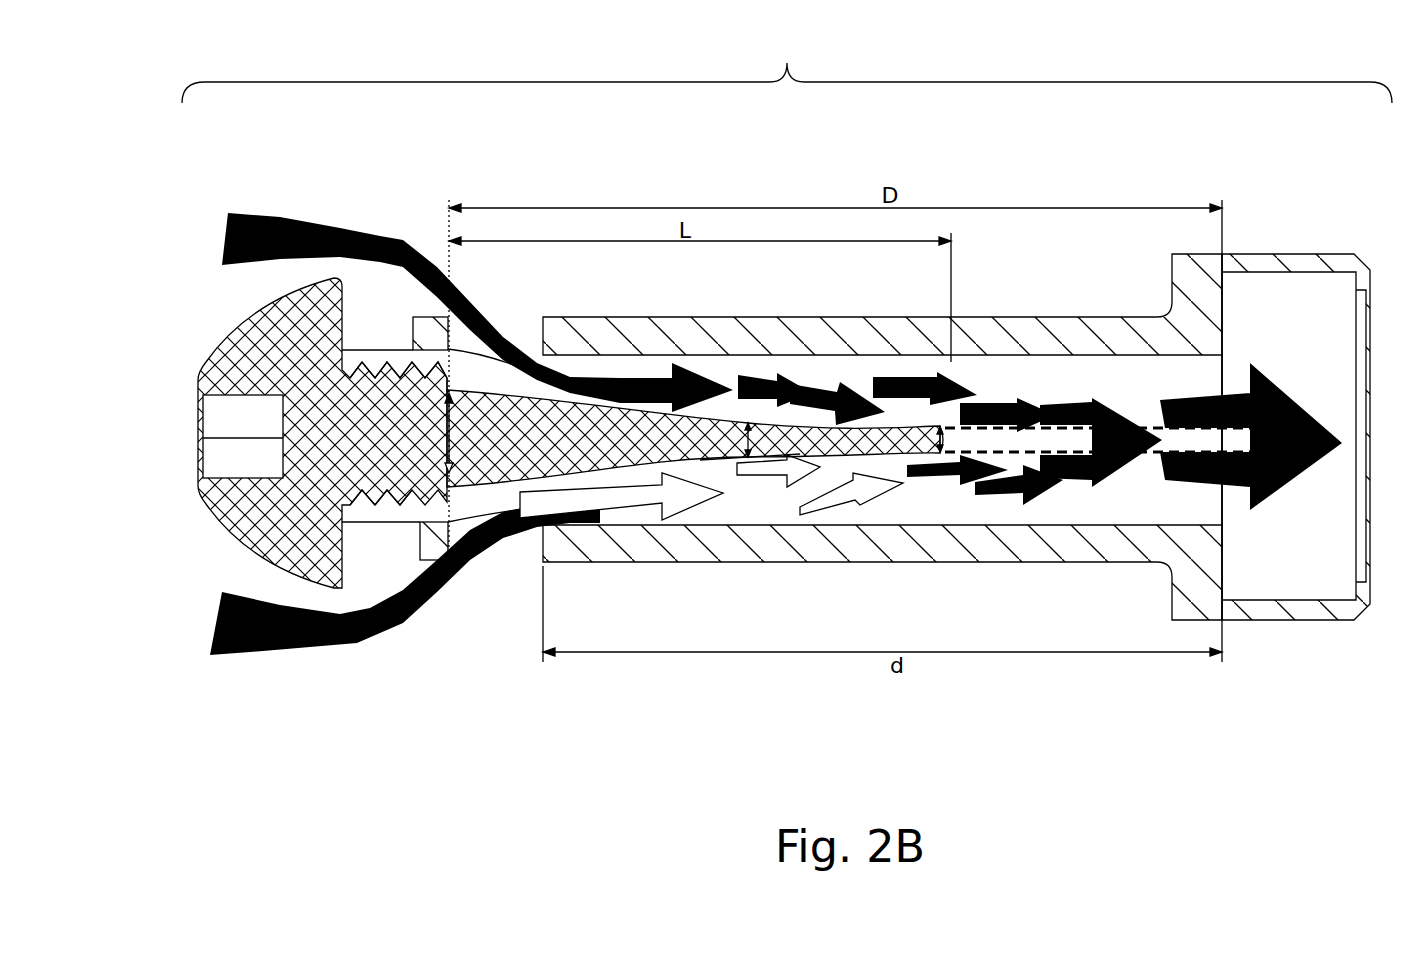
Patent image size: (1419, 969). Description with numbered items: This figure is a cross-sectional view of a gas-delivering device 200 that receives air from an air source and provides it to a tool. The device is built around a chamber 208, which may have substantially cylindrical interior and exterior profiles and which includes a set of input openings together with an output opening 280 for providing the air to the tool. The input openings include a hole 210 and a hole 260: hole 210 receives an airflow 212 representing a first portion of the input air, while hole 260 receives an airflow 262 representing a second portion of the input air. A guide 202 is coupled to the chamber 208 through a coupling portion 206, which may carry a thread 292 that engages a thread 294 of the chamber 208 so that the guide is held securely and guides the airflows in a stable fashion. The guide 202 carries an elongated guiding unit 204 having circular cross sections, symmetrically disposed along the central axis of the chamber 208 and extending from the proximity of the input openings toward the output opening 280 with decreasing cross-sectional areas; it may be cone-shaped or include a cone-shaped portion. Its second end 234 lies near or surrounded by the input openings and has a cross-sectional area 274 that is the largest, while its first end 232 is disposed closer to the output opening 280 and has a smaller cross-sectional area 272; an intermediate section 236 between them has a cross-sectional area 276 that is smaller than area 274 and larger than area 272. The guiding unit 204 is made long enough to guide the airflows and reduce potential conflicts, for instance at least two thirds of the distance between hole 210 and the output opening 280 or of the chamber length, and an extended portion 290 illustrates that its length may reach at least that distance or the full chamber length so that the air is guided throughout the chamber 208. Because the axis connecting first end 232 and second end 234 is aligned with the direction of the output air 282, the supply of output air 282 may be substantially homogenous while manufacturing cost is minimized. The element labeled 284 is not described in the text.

The gas-delivering device 200 is at (787, 66).
The guide 202 is at (200, 522).
The guiding unit 204 is at (592, 450).
The coupling portion 206 is at (400, 440).
The chamber 208 is at (1010, 335).
The hole 210 is at (513, 340).
The airflow 212 is at (397, 244).
The first end 232 is at (940, 430).
The second end 234 is at (448, 388).
The intermediate section 236 is at (748, 421).
The hole 260 is at (518, 542).
The airflow 262 is at (448, 597).
The cross-sectional area 272 is at (940, 437).
The cross-sectional area 274 is at (486, 449).
The cross-sectional area 276 is at (753, 457).
The output opening 280 is at (1217, 502).
The output air 282 is at (1277, 488).
The flange 284 is at (1252, 268).
The extended portion 290 is at (1163, 447).
The thread 292 is at (400, 503).
The thread 294 is at (381, 505).